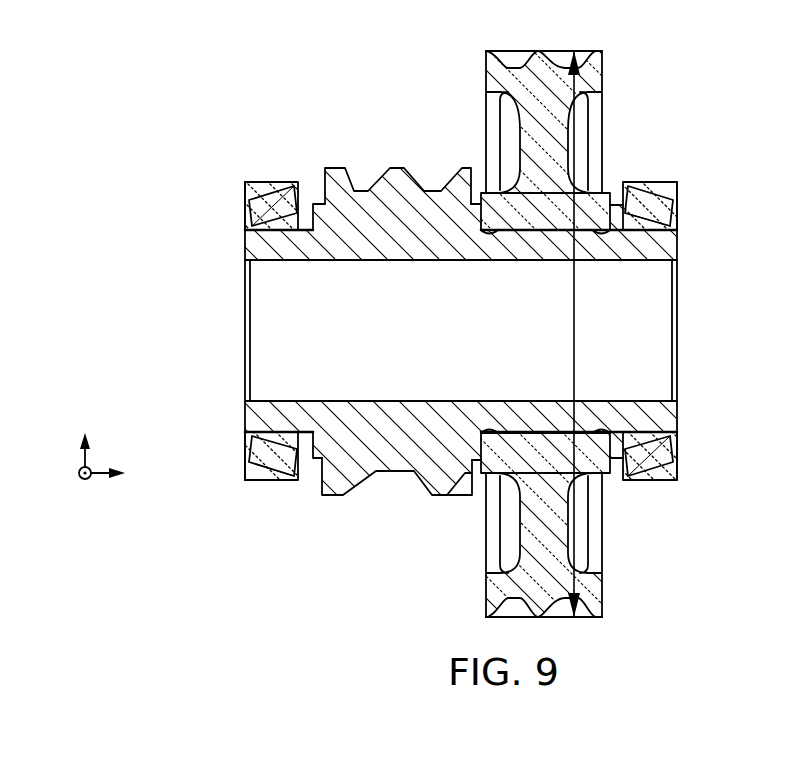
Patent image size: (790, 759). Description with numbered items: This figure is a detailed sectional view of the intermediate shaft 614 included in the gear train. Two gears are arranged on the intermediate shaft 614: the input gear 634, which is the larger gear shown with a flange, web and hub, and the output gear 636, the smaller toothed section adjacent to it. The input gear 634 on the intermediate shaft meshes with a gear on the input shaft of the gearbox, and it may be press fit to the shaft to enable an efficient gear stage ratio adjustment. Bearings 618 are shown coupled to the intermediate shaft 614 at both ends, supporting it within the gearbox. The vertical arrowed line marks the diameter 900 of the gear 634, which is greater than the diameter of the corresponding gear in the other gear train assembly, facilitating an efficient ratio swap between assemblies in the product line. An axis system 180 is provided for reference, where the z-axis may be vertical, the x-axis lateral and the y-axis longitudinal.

The intermediate shaft 614 is at (208, 227).
The bearing 618 is at (268, 158).
The output gear 636 is at (395, 138).
The input gear 634 is at (559, 18).
The diameter 900 is at (576, 133).
The axis system 180 is at (112, 448).